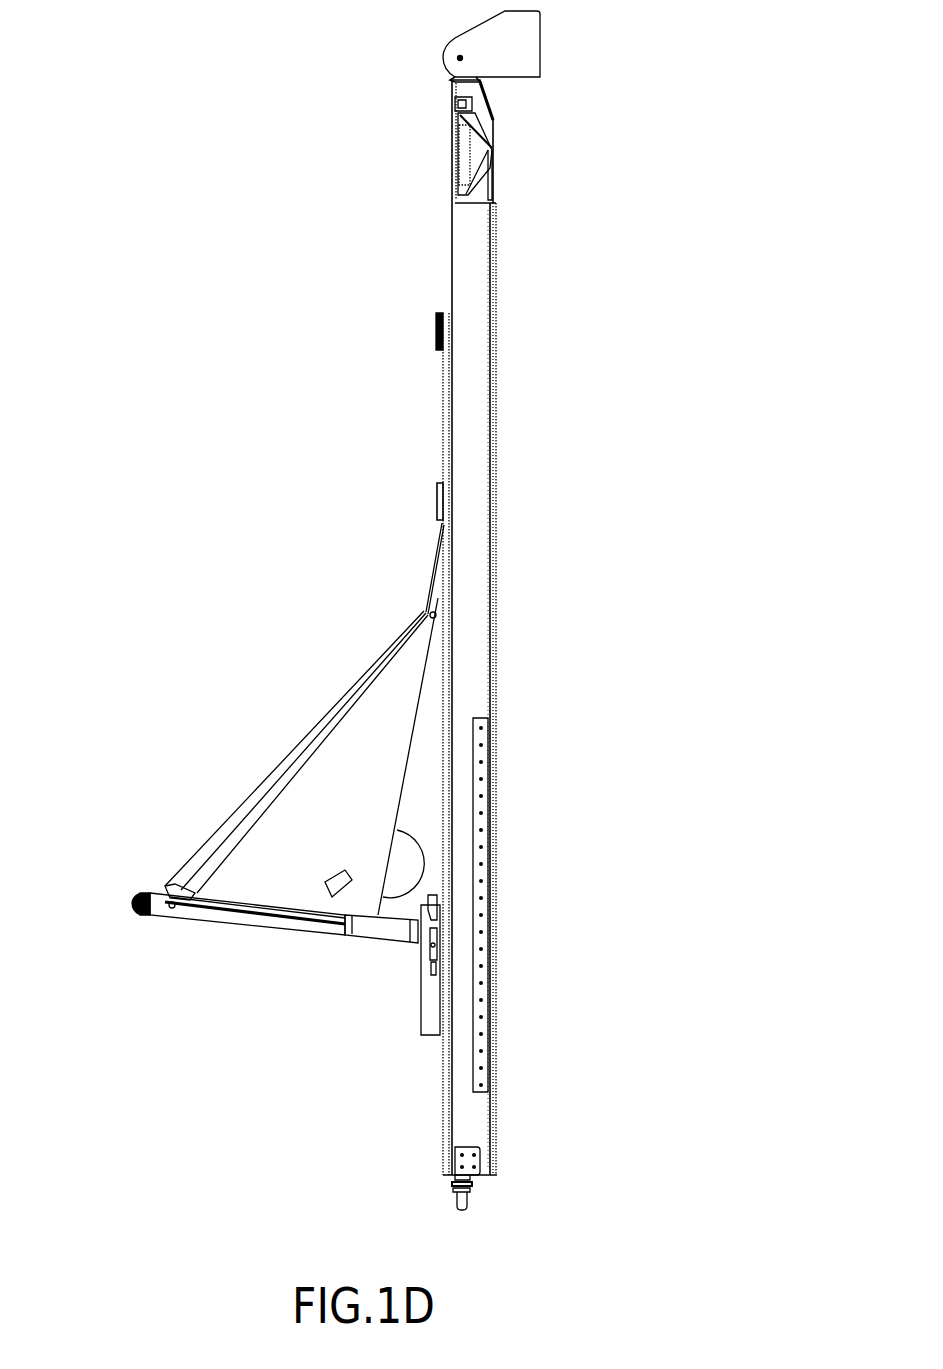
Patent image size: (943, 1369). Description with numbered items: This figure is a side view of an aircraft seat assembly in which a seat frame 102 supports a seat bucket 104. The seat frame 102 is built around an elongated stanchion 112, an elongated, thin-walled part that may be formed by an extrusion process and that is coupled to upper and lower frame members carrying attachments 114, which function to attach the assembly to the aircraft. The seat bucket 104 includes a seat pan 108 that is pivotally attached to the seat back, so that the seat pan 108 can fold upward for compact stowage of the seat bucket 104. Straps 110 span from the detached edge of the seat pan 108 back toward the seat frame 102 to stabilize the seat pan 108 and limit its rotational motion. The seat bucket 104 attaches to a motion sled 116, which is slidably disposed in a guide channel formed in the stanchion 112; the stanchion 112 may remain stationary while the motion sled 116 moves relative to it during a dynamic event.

The seat frame 102 is at (495, 245).
The seat bucket 104 is at (190, 912).
The seat pan 108 is at (150, 893).
The straps 110 is at (205, 850).
The stanchion 112 is at (472, 353).
The attachments 114 is at (527, 46).
The motion sled 116 is at (447, 418).